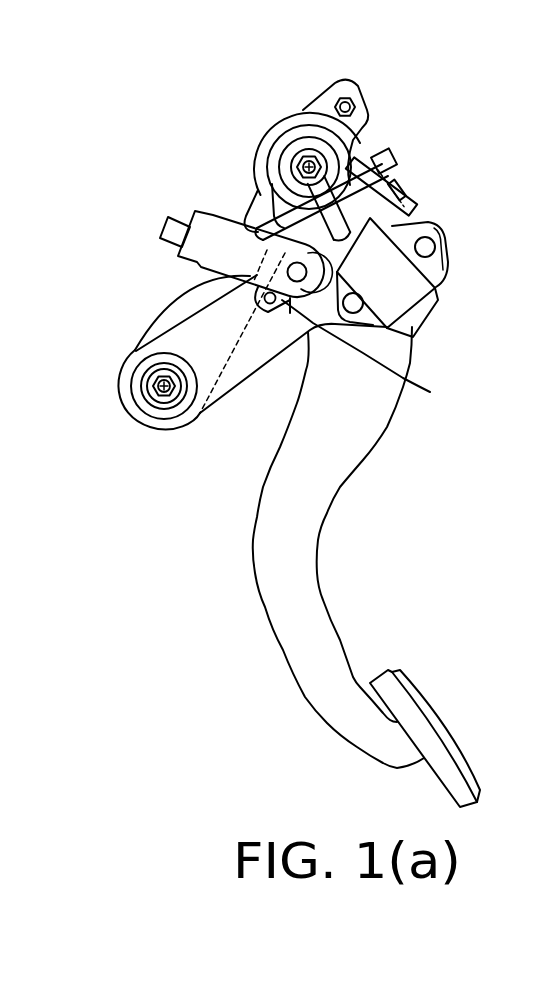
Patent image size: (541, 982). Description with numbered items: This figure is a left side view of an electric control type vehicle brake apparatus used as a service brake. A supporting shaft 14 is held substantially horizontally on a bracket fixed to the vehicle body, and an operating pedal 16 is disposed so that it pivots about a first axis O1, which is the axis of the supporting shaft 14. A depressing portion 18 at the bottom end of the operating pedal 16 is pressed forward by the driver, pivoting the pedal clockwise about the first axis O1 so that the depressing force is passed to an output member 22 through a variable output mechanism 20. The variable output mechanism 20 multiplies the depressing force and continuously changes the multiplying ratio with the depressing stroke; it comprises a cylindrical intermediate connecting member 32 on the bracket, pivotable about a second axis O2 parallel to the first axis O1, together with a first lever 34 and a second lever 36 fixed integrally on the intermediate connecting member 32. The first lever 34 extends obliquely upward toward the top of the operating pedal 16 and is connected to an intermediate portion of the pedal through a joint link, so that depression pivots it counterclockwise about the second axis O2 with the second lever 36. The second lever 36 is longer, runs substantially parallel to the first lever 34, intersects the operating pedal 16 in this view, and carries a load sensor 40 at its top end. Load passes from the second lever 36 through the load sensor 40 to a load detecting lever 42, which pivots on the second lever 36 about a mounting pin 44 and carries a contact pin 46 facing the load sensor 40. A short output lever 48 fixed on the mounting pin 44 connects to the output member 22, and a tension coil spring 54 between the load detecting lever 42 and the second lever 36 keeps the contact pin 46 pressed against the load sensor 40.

The supporting shaft 14 is at (330, 156).
The operating pedal 16 is at (303, 537).
The depressing portion 18 is at (427, 720).
The variable output mechanism 20 is at (132, 299).
The output member 22 is at (203, 227).
The intermediate connecting member 32 is at (142, 385).
The first lever 34 is at (161, 330).
The second lever 36 is at (225, 383).
The load sensor 40 is at (440, 300).
The load detecting lever 42 is at (252, 212).
The mounting pin 44 is at (270, 304).
The contact pin 46 is at (386, 162).
The output lever 48 is at (414, 388).
The tension coil spring 54 is at (401, 192).
The first axis O1 is at (308, 165).
The second axis O2 is at (164, 390).